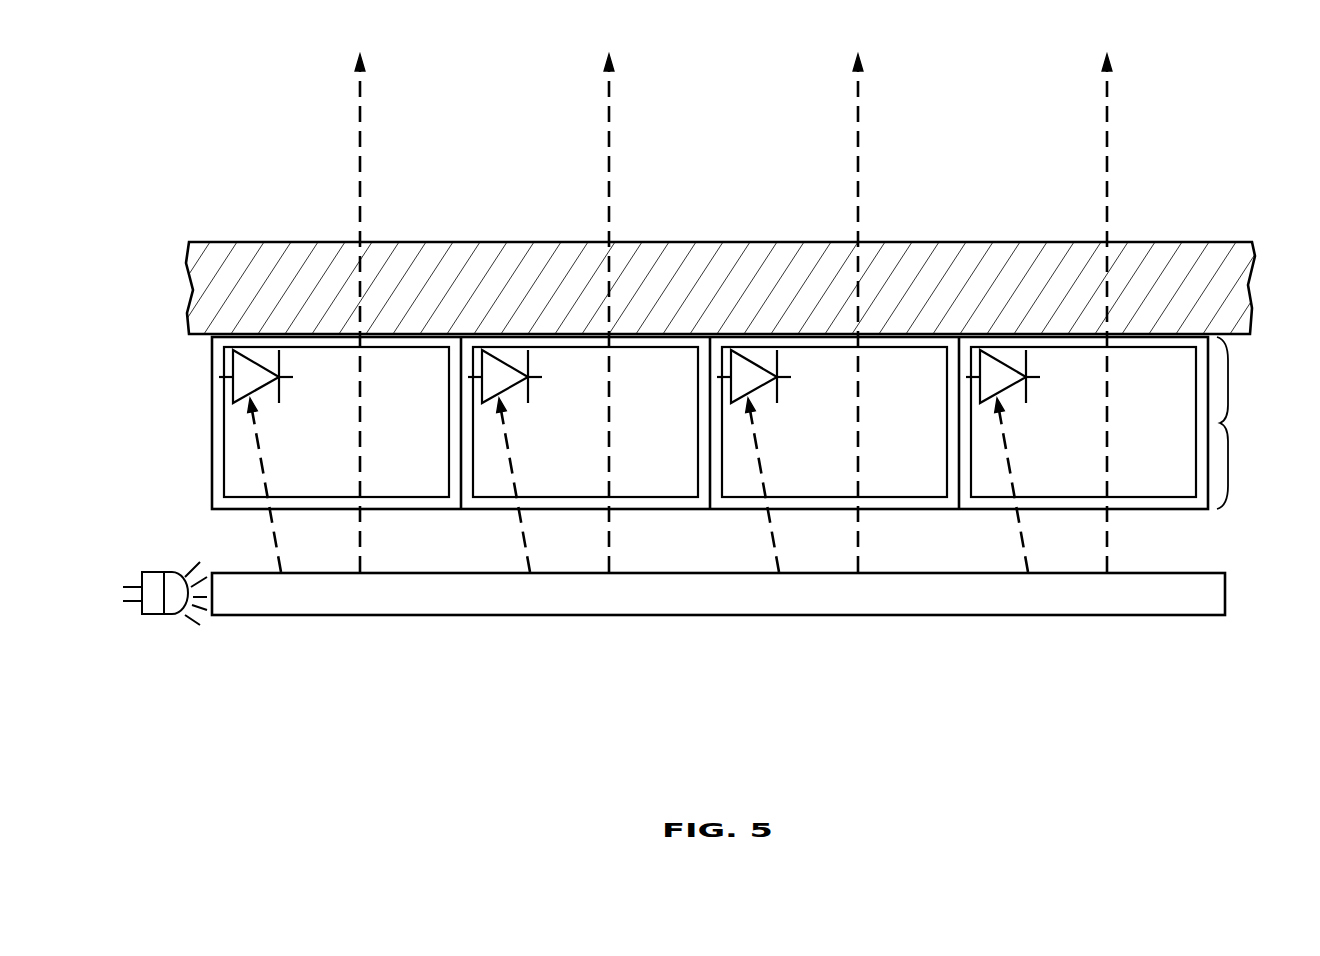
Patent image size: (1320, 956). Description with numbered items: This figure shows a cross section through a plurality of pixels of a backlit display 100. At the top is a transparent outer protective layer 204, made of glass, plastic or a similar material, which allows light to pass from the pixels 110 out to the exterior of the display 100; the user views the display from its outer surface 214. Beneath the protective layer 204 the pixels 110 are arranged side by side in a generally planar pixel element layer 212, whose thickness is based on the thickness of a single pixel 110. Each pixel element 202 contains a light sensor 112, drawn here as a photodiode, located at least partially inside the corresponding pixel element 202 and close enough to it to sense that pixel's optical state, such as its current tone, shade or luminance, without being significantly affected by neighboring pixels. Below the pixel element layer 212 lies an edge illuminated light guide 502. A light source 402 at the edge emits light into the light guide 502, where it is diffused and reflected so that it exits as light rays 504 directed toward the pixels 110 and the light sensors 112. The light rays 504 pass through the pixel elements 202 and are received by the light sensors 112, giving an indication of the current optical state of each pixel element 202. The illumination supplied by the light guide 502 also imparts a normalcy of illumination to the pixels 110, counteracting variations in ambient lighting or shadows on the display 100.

The display 100 is at (153, 69).
The pixel 110 is at (245, 520).
The light sensor 112 is at (281, 373).
The pixel element 202 is at (430, 378).
The transparent outer protective layer 204 is at (720, 241).
The pixel element layer 212 is at (1232, 423).
The outer surface 214 is at (541, 197).
The light source 402 is at (155, 614).
The light guide 502 is at (793, 604).
The light ray 504 is at (279, 546).